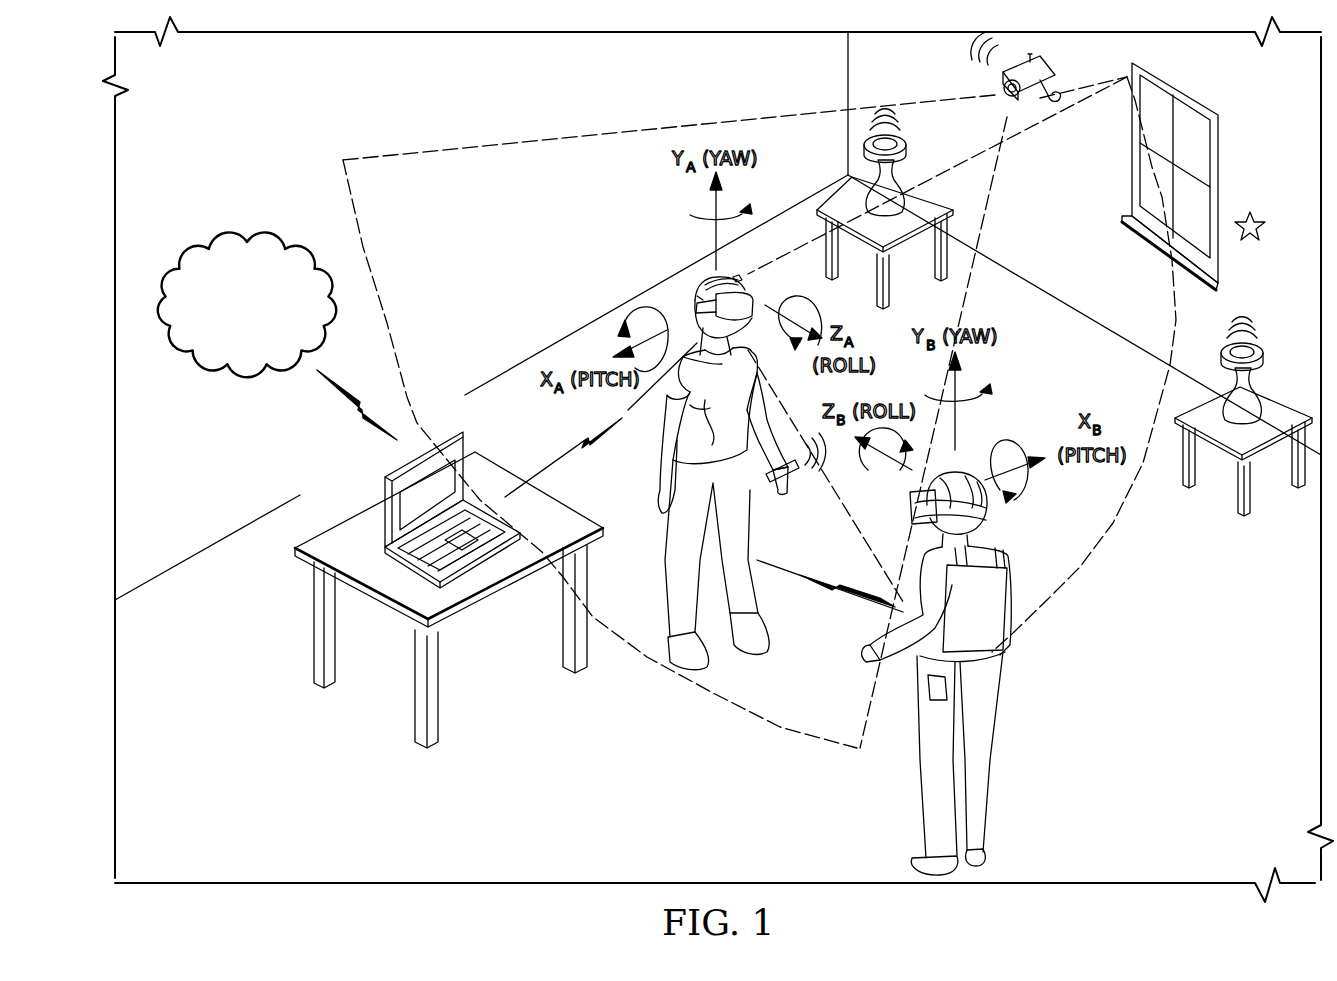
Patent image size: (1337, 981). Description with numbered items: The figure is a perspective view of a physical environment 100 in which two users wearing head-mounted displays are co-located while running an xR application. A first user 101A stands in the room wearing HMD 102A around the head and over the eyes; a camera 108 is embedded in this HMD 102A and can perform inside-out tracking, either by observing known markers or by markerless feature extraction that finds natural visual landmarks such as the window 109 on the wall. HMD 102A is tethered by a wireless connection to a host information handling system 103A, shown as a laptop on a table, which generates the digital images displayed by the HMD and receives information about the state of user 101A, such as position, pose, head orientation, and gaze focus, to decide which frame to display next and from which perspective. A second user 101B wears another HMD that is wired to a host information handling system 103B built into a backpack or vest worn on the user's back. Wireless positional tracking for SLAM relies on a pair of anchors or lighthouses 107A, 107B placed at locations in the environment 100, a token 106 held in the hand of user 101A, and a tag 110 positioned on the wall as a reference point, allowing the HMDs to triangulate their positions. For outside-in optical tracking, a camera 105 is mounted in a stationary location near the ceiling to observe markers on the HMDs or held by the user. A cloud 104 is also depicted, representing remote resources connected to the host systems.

The physical environment 100 is at (110, 196).
The user 101A is at (665, 465).
The user 101B is at (990, 765).
The head-mounted display 102A is at (697, 294).
The host information handling system 103A is at (383, 490).
The host information handling system 103B is at (1000, 640).
The cloud 104 is at (270, 338).
The camera 105 is at (1048, 72).
The token 106 is at (802, 480).
The anchor 107A is at (907, 150).
The anchor 107B is at (1258, 332).
The camera 108 is at (746, 292).
The window 109 is at (1222, 160).
The tag 110 is at (1262, 216).